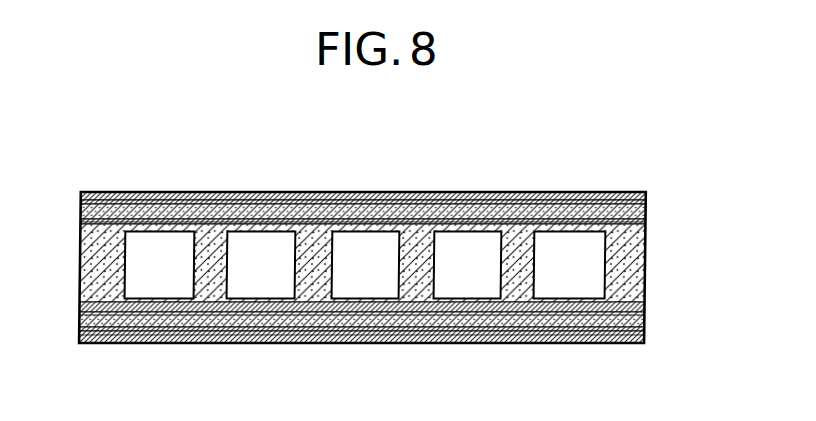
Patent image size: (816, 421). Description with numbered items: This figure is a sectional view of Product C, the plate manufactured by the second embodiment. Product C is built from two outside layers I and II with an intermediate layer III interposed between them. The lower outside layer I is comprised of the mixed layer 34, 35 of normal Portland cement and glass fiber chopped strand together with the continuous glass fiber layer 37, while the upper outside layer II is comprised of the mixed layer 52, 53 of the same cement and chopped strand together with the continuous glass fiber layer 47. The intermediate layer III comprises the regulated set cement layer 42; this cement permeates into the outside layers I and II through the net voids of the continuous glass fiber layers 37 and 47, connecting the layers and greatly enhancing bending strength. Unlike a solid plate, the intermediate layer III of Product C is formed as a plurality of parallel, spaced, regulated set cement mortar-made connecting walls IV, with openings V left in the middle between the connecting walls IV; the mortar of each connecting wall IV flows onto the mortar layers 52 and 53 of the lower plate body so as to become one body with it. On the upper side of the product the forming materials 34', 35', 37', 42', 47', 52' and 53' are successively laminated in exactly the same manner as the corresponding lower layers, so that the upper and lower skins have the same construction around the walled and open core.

The Product C is at (112, 186).
The outside layer I is at (378, 352).
The outside layer II is at (381, 171).
The intermediate layer III is at (383, 299).
The connecting wall IV is at (363, 299).
The opening V is at (363, 299).
The mixed layer 34 is at (361, 374).
The mixed layer 35 is at (361, 374).
The continuous glass fiber layer 37 is at (361, 359).
The regulated set cement layer 42 is at (361, 347).
The continuous glass fiber layer 47 is at (361, 348).
The mixed layer 52 is at (361, 342).
The mixed layer 53 is at (361, 342).
The forming material 34' is at (362, 178).
The forming material 35' is at (362, 178).
The forming material 37' is at (362, 178).
The forming material 42' is at (362, 174).
The forming material 47' is at (363, 166).
The forming material 52' is at (363, 159).
The forming material 53' is at (363, 159).